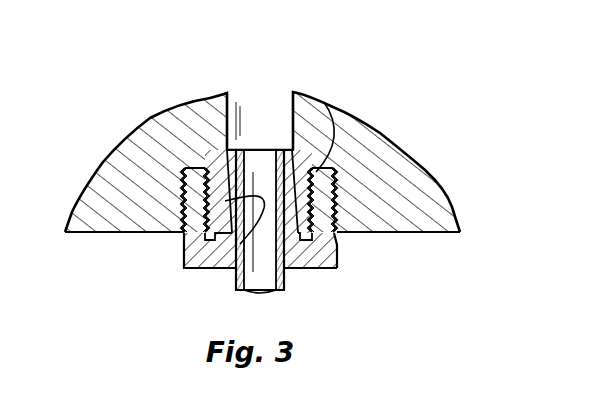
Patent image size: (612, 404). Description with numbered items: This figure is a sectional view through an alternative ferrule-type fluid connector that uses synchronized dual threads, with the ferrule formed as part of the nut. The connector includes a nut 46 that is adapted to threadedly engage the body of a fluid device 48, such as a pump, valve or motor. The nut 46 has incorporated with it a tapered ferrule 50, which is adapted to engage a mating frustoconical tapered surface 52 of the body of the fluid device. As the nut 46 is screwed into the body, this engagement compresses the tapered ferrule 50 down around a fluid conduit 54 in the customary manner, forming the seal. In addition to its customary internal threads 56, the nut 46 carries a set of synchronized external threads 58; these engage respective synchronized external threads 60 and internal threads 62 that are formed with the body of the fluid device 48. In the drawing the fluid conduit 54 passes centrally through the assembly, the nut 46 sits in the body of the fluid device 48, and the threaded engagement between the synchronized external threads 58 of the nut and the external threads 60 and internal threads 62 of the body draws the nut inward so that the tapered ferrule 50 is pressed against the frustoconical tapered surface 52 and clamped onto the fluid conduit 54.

The nut 46 is at (340, 262).
The body of a fluid device 48 is at (372, 134).
The tapered ferrule 50 is at (326, 101).
The frustoconical tapered surface 52 is at (236, 255).
The fluid conduit 54 is at (285, 280).
The internal threads 56 is at (338, 222).
The synchronized external threads 58 is at (340, 186).
The synchronized external threads 60 is at (225, 201).
The internal threads 62 is at (187, 236).